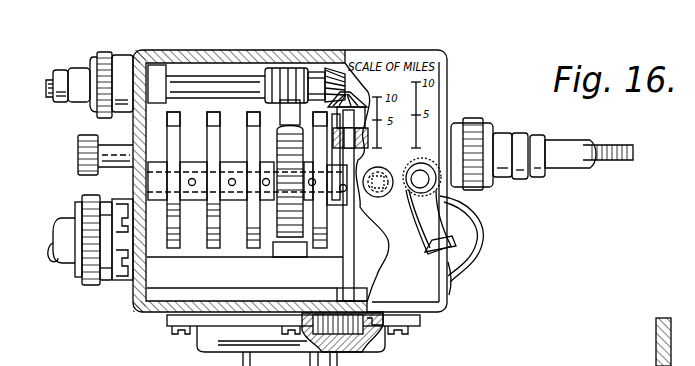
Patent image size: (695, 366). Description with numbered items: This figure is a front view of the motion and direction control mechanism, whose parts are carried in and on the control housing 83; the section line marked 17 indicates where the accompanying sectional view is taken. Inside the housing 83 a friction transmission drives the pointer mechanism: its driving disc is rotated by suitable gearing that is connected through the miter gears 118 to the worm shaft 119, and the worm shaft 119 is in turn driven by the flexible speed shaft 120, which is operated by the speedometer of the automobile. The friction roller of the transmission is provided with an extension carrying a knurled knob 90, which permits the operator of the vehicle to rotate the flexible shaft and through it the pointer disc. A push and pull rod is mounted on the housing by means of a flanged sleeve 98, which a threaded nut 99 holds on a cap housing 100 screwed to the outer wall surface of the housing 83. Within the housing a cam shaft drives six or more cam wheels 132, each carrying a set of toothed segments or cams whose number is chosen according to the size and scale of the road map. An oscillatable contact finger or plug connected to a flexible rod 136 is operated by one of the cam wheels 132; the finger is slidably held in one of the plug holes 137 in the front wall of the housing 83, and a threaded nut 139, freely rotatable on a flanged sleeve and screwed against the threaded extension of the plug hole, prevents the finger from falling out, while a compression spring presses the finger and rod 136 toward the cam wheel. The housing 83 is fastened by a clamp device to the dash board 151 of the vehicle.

The section line 17- 17 is at (409, 194).
The control housing 83 is at (448, 92).
The knurled knob 90 is at (78, 158).
The flanged sleeve 98 is at (66, 219).
The threaded nut 99 is at (83, 280).
The cap housing 100 is at (121, 282).
The miter gears 118 is at (346, 80).
The worm shaft 119 is at (205, 77).
The flexible speed shaft 120 is at (55, 85).
The cam wheels 132 is at (254, 246).
The flexible rod 136 is at (450, 285).
The plug holes 137 is at (380, 194).
The threaded nut 139 is at (452, 205).
The dash board 151 is at (652, 360).